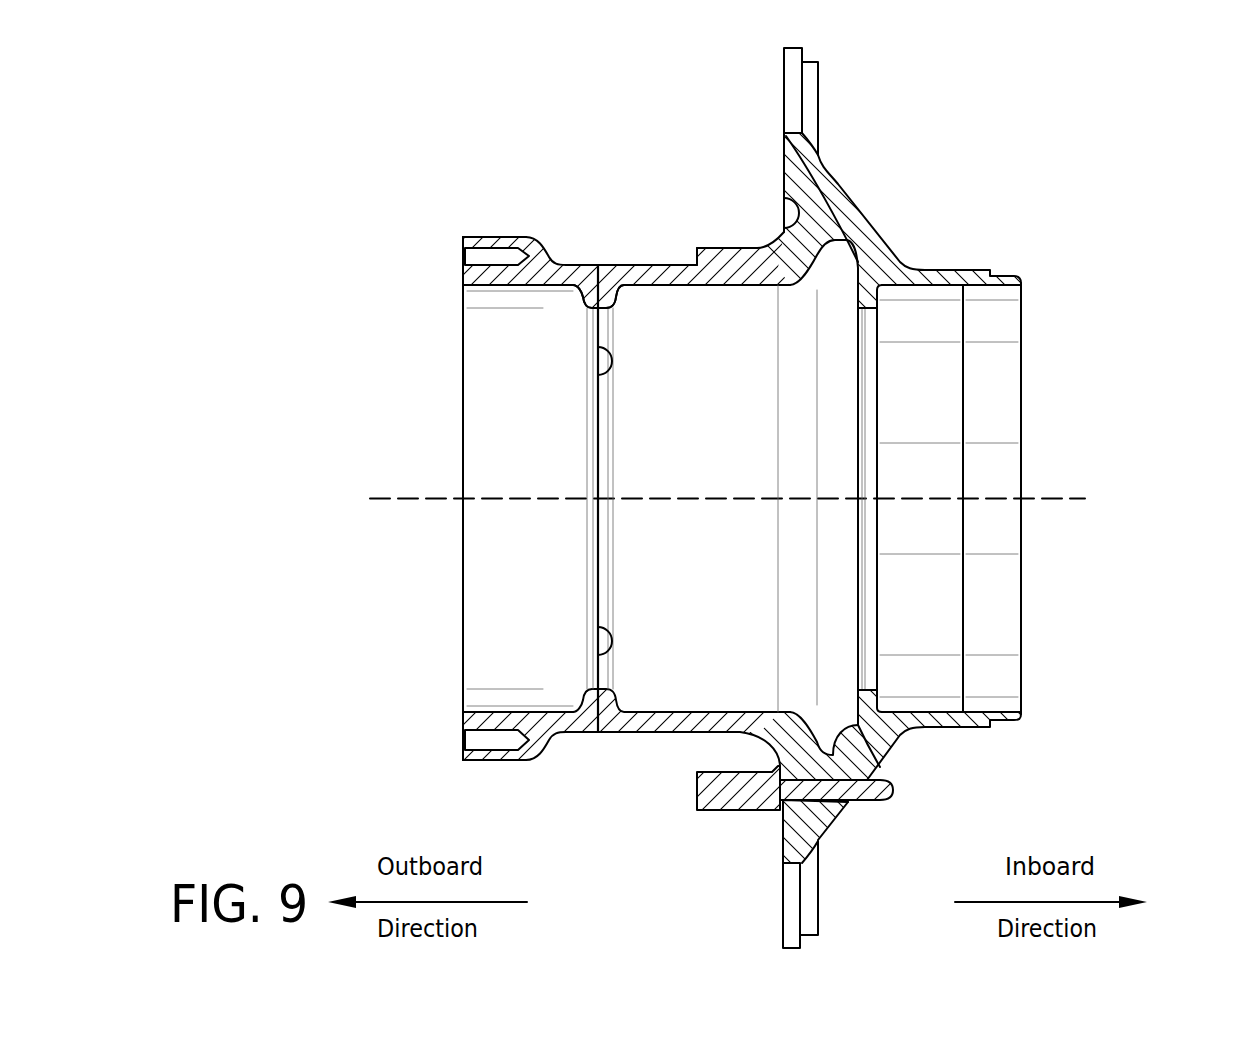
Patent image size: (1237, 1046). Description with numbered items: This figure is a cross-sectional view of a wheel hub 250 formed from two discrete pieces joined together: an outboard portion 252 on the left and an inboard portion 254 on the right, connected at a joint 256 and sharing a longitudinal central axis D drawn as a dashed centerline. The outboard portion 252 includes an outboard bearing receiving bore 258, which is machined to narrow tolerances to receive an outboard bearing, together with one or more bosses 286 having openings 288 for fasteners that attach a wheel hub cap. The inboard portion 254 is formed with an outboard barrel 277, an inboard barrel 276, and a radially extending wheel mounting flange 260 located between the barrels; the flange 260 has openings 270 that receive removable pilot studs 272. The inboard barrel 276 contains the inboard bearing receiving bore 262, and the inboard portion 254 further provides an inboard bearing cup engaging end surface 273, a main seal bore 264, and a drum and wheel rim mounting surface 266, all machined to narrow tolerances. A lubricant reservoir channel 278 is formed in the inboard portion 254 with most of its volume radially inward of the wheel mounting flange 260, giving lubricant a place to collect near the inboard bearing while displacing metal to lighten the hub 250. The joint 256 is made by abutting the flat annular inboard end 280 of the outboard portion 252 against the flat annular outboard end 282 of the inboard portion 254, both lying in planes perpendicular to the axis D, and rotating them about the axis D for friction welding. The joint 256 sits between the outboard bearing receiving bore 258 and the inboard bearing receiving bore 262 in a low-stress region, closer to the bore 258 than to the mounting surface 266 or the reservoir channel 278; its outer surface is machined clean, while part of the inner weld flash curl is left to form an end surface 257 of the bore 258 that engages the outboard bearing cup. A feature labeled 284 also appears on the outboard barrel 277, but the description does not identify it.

The wheel hub 250 is at (1177, 158).
The outboard portion 252 is at (440, 783).
The inboard portion 254 is at (1028, 761).
The joint 256 is at (597, 552).
The end surface 257 is at (580, 303).
The outboard bearing receiving bore 258 is at (487, 712).
The wheel mounting flange 260 is at (840, 155).
The inboard bearing receiving bore 262 is at (925, 708).
The main seal bore 264 is at (985, 708).
The drum and wheel rim mounting surface 266 is at (785, 140).
The openings 270 is at (893, 797).
The pilot studs 272 is at (707, 811).
The inboard bearing cup engaging end surface 273 is at (878, 692).
The inboard barrel 276 is at (978, 255).
The outboard barrel 277 is at (662, 250).
The lubricant reservoir channel 278 is at (878, 745).
The inboard end 280 is at (595, 350).
The outboard end 282 is at (605, 645).
The raised portion 284 is at (777, 270).
The bosses 286 is at (500, 237).
The openings 288 is at (465, 254).
The longitudinal central axis D is at (744, 499).